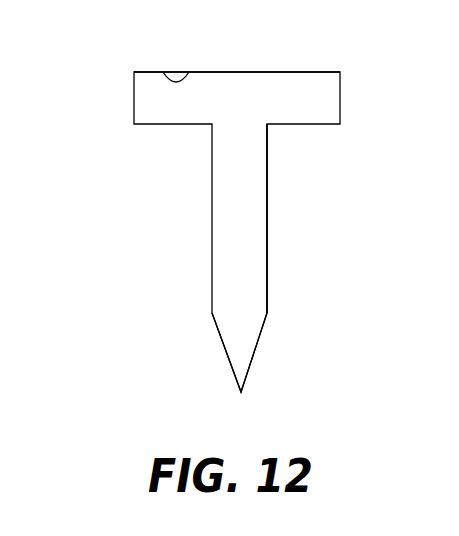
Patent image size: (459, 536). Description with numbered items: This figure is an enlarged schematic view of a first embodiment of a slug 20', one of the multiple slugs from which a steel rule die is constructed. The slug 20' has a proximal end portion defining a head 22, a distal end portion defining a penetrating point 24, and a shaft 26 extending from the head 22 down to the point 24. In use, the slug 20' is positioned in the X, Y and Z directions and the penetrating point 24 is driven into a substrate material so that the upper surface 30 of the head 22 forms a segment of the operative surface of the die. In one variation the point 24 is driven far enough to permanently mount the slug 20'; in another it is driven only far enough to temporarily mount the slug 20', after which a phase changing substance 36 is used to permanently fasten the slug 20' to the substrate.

The slug 20' is at (185, 208).
The head 22 is at (340, 96).
The upper surface 30 is at (186, 77).
The shaft 26 is at (267, 233).
The phase changing substance 36 is at (267, 181).
The penetrating point 24 is at (242, 393).